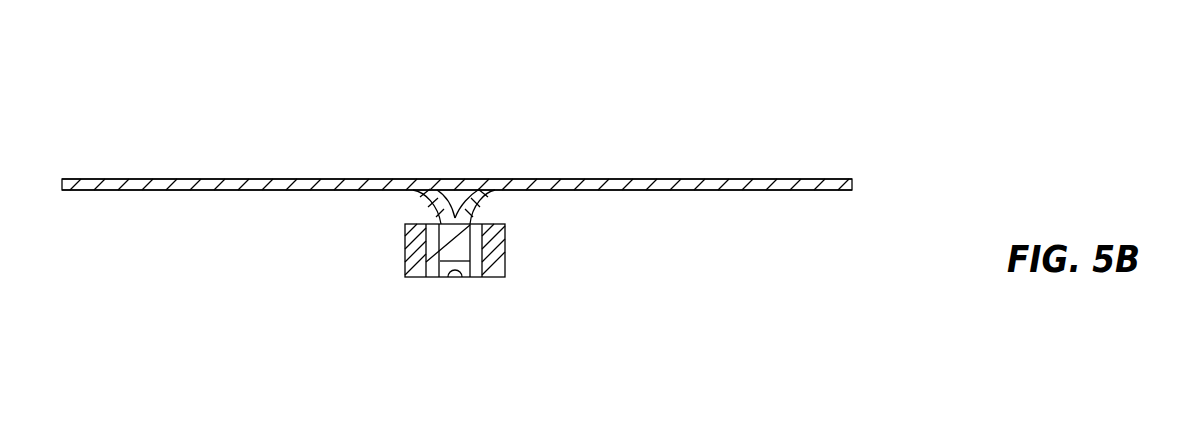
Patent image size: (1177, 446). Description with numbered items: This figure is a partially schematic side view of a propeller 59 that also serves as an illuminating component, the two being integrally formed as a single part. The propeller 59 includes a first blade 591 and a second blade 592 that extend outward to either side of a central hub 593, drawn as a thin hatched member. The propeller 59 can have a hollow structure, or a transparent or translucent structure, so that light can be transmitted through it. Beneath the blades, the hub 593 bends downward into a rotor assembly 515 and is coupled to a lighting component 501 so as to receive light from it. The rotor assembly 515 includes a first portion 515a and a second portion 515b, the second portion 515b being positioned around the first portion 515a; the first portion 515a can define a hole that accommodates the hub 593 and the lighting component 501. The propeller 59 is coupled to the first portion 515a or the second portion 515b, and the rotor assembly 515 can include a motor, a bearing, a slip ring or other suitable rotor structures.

The propeller 59 is at (818, 172).
The first blade 591 is at (663, 171).
The second blade 592 is at (139, 176).
The hub 593 is at (461, 171).
The rotor assembly 515 is at (414, 291).
The first portion 515a is at (499, 274).
The second portion 515b is at (483, 272).
The lighting component 501 is at (457, 280).